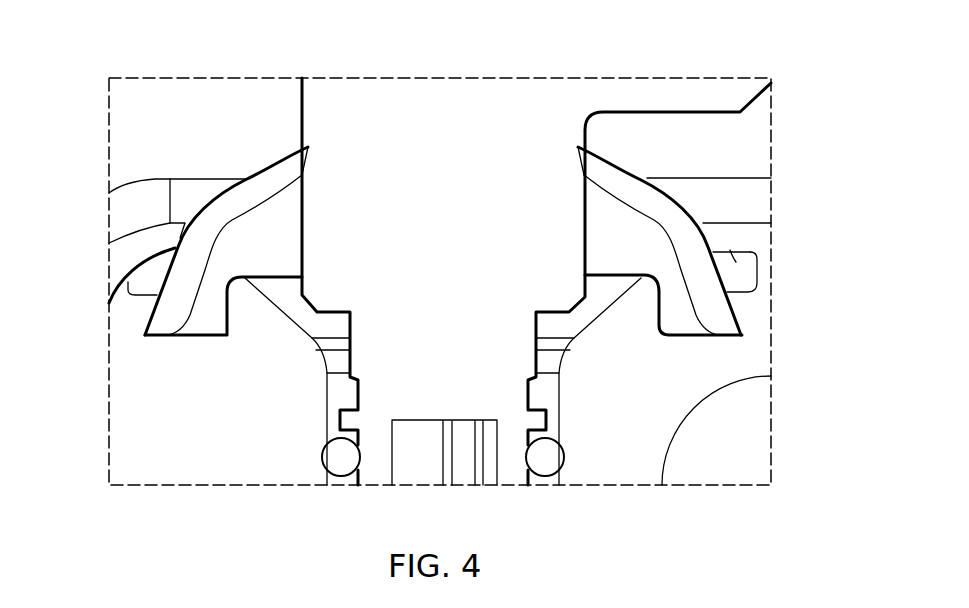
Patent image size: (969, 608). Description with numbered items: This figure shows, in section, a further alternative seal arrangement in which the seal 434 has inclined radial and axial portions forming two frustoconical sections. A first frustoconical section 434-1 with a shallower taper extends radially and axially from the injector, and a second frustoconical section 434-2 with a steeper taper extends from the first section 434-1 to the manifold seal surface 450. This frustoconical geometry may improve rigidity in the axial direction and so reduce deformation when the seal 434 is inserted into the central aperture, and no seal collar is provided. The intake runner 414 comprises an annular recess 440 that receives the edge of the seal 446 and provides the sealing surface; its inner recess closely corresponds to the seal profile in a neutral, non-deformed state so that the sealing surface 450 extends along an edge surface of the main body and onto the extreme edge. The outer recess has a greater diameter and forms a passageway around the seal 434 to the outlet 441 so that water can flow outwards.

The intake runner 414 is at (145, 395).
The seal 434 is at (683, 175).
The first frustoconical section 434-1 is at (610, 175).
The second frustoconical section 434-2 is at (705, 283).
The annular recess 440 is at (735, 260).
The outlet 441 is at (128, 280).
The seal 446 is at (145, 335).
The manifold seal surface 450 is at (152, 303).